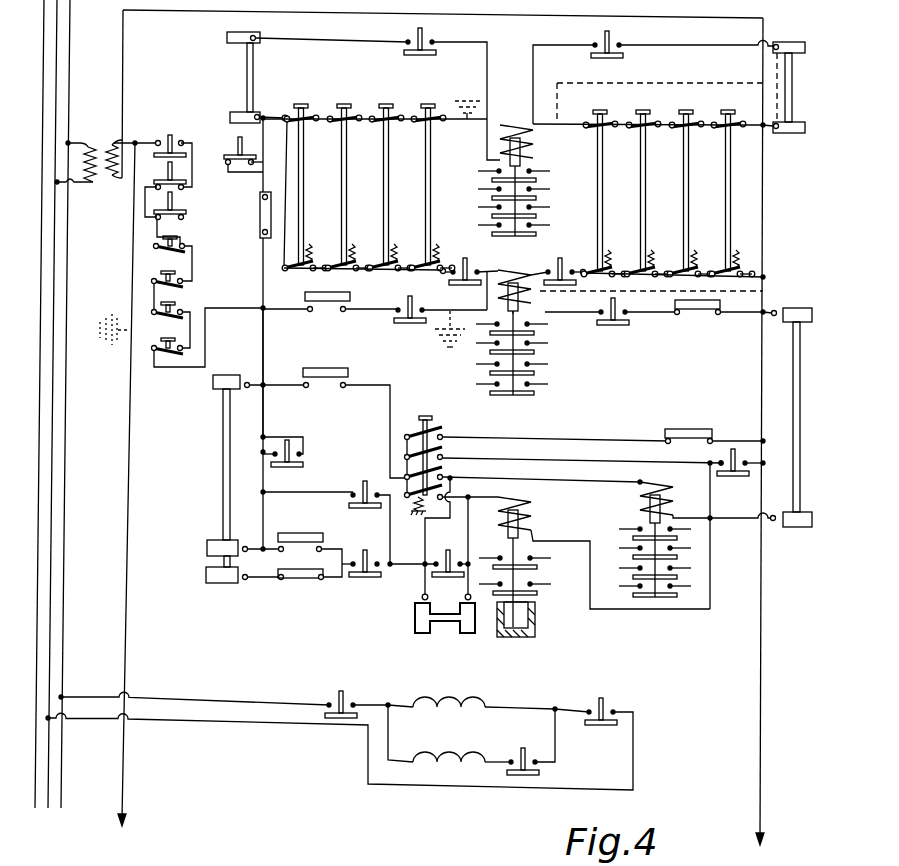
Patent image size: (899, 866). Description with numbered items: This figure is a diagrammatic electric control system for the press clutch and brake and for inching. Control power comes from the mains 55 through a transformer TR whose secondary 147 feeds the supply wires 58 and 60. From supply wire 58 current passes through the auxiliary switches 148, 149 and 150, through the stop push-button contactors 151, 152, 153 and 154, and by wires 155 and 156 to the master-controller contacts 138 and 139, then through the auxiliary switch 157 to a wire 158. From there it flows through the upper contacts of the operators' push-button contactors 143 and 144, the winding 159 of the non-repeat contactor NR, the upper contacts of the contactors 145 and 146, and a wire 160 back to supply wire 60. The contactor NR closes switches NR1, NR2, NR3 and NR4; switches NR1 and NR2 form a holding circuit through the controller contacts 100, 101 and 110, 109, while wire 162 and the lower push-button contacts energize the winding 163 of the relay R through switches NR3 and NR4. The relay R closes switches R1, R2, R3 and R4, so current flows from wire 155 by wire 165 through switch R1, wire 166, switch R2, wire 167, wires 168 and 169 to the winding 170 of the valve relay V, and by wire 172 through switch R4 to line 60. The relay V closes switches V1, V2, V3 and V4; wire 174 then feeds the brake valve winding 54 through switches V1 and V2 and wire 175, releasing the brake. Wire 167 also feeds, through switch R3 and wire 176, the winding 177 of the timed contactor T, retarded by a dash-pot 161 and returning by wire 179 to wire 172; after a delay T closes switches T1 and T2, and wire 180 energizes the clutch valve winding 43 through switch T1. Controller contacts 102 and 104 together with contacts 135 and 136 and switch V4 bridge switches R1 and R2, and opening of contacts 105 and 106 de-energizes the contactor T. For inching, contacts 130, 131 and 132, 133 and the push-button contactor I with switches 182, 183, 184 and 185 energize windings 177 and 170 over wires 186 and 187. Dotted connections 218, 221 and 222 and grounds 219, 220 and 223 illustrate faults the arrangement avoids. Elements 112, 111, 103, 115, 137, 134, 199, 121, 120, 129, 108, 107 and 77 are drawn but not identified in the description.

The mains 55 is at (45, 67).
The supply wire 60 is at (126, 58).
The supply wire 58 is at (128, 262).
The transformer TR is at (106, 164).
The transformer secondary 147 is at (106, 184).
The terminal block 112 is at (236, 44).
The controller contact 101 is at (256, 45).
The terminal block 111 is at (240, 113).
The controller contact 100 is at (258, 111).
The wire 158 is at (285, 115).
The wire 162 is at (289, 178).
The wire 156 is at (263, 288).
The wire 155 is at (225, 309).
The auxiliary switch 157 is at (237, 152).
The controller contact 139 is at (260, 200).
The auxiliary switch 148 is at (175, 141).
The auxiliary switch 149 is at (177, 190).
The auxiliary switch 150 is at (160, 222).
The stop push-button contactor 151 is at (177, 244).
The stop push-button contactor 152 is at (182, 282).
The stop push-button contactor 153 is at (178, 310).
The stop push-button contactor 154 is at (176, 352).
The line ground 220 is at (108, 345).
The wire 165 is at (264, 351).
The controller contact 102 is at (247, 382).
The terminal block 103 is at (245, 546).
The controller contact 104 is at (245, 580).
The terminal block 115 is at (216, 583).
The resistor terminal 137 is at (310, 312).
The controller contact 138 is at (343, 312).
The controller contact 133 is at (306, 388).
The controller contact 132 is at (343, 388).
The resistor terminal 134 is at (281, 552).
The controller contact 135 is at (319, 552).
The controller contact 136 is at (321, 582).
The relay switch R1 is at (301, 463).
The wire 166 is at (297, 494).
The relay switch R2 is at (361, 494).
The valve relay switch V4 is at (363, 558).
The wire 167 is at (398, 563).
The relay switch R3 is at (458, 560).
The inching contactor I is at (432, 424).
The inching contactor switch 182 is at (448, 439).
The inching contactor switch 183 is at (445, 459).
The inching contactor switch 184 is at (447, 478).
The inching contactor switch 185 is at (452, 497).
The wire 187 is at (557, 440).
The wire 186 is at (591, 463).
The wire 169 is at (530, 482).
The wire 168 is at (424, 527).
The wire 176 is at (468, 530).
The drum controller contact 105 is at (422, 596).
The drum controller contact 106 is at (465, 596).
The controller contact 131 is at (662, 437).
The controller contact 130 is at (712, 441).
The relay switch R4 is at (748, 477).
The wire 172 is at (711, 498).
The valve relay V is at (637, 522).
The valve relay winding 170 is at (660, 490).
The valve relay switch V1 is at (348, 700).
The valve relay switch V2 is at (611, 711).
The valve relay switch V3 is at (621, 311).
The wire 179 is at (603, 609).
The delayed operation contactor T is at (550, 559).
The timed contactor winding 177 is at (524, 510).
The timed contactor switch T1 is at (534, 565).
The timed contactor switch T2 is at (423, 310).
The ground 223 is at (432, 338).
The dash-pot retarder 161 is at (535, 617).
The non-repeat contactor switch NR1 is at (431, 48).
The non-repeat contactor switch NR2 is at (618, 51).
The non-repeat contactor NR is at (537, 169).
The non-repeat contactor winding 159 is at (532, 140).
The non-repeat contactor switch NR3 is at (468, 270).
The relay winding 163 is at (516, 266).
The non-repeat contactor switch NR4 is at (558, 267).
The magnetic relay R is at (477, 368).
The ground 219 is at (462, 98).
The operators' push-button contactor 143 is at (338, 104).
The operators' push-button contactor 144 is at (426, 104).
The operators' push-button contactor 145 is at (641, 109).
The operators' push-button contactor 146 is at (727, 109).
The contact spring 199 is at (312, 256).
The wire 160 is at (756, 128).
The dotted line connection 218 is at (645, 83).
The dotted line connection 221 is at (775, 70).
The drum-controller contact 110 is at (778, 44).
The terminal bar 121 is at (793, 56).
The terminal block 120 is at (796, 122).
The drum-controller contact 109 is at (785, 134).
The dotted line connection 222 is at (592, 293).
The resistor terminal 129 is at (677, 316).
The terminal block 108 is at (776, 310).
The terminal 107 is at (774, 522).
The wire 174 is at (207, 703).
The wire 175 is at (249, 724).
The brake valve winding 54 is at (465, 698).
The wire 180 is at (390, 736).
The clutch valve winding 43 is at (460, 752).
The switch 77 is at (530, 756).